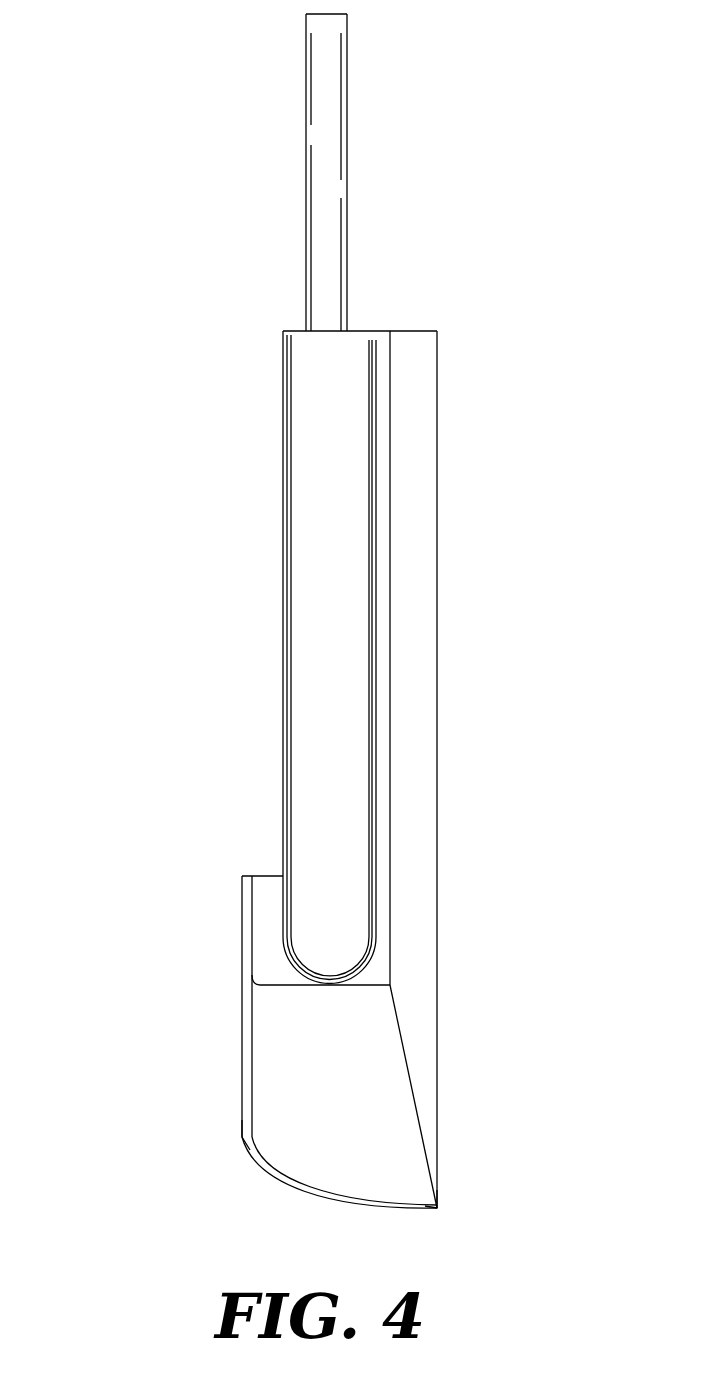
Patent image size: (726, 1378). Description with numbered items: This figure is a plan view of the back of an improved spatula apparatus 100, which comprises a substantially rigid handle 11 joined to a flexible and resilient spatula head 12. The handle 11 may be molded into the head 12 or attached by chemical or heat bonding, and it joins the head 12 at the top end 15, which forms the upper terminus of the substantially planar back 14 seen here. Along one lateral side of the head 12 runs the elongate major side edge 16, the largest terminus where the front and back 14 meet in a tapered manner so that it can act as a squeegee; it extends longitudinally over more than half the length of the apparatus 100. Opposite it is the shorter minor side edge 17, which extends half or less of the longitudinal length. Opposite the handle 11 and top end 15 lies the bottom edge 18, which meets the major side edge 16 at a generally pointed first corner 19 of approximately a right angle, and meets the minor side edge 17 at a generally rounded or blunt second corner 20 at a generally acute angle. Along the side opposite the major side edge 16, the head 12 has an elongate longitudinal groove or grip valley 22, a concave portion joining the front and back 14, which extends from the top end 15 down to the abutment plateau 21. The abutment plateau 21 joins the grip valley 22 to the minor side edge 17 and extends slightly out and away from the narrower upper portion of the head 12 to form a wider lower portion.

The spatula apparatus 100 is at (105, 135).
The handle 11 is at (338, 185).
The spatula head 12 is at (548, 512).
The back 14 is at (290, 657).
The top end 15 is at (380, 331).
The elongate major side edge 16 is at (437, 782).
The minor side edge 17 is at (243, 985).
The bottom edge 18 is at (305, 1192).
The first corner 19 is at (438, 1208).
The second corner 20 is at (242, 1135).
The abutment plateau 21 is at (262, 874).
The grip valley 22 is at (283, 618).